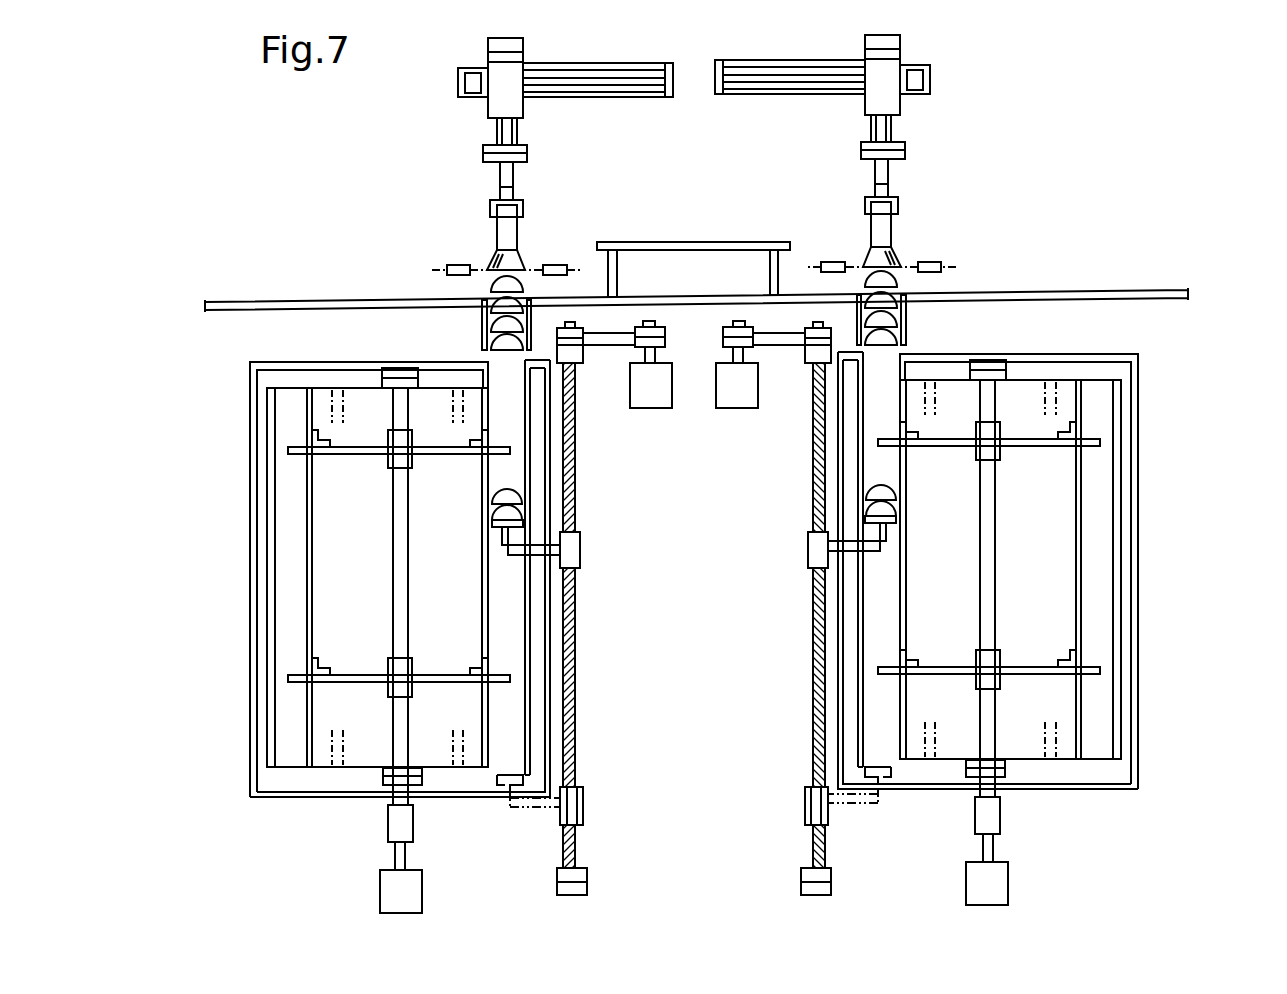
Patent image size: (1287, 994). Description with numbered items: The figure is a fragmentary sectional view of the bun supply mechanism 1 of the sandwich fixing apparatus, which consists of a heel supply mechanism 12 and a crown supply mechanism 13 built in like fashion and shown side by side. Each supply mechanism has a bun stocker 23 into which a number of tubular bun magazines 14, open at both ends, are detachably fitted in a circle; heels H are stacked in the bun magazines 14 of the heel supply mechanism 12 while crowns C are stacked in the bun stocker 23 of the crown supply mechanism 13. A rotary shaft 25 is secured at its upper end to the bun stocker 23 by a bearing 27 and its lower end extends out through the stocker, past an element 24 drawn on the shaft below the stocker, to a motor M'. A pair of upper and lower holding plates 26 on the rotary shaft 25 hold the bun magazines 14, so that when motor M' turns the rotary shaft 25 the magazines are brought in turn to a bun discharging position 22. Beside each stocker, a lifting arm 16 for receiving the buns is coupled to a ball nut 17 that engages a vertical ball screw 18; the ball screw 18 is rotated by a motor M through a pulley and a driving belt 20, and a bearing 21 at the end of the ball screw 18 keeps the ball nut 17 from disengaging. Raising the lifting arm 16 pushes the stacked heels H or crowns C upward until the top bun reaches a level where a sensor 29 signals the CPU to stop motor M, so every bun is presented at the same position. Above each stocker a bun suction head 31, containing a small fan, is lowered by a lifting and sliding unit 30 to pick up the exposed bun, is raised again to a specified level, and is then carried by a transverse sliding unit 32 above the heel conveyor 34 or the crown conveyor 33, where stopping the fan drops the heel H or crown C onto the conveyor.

The bun supply mechanism 1 is at (770, 837).
The heel supply mechanism 12 is at (798, 830).
The crown supply mechanism 13 is at (592, 830).
The bun magazine 14 is at (270, 766).
The lifting arm 16 is at (557, 578).
The ball nut 17 is at (581, 550).
The ball screw 18 is at (578, 660).
The driving belt 20 is at (600, 340).
The bearing 21 is at (565, 881).
The bun discharging position 22 is at (507, 744).
The bun stocker 23 is at (253, 445).
The coupling 24 is at (398, 826).
The rotary shaft 25 is at (395, 545).
The holding plates 26 is at (330, 450).
The bearing 27 is at (395, 372).
The sensor 29 is at (455, 268).
The lifting and sliding unit 30 is at (497, 128).
The bun suction head 31 is at (494, 262).
The transverse sliding unit 32 is at (745, 97).
The crown conveyor 33 is at (699, 236).
The heel conveyor 34 is at (699, 236).
The crowns C is at (497, 296).
The heels H is at (900, 290).
The motor M is at (694, 403).
The motor M' is at (704, 887).